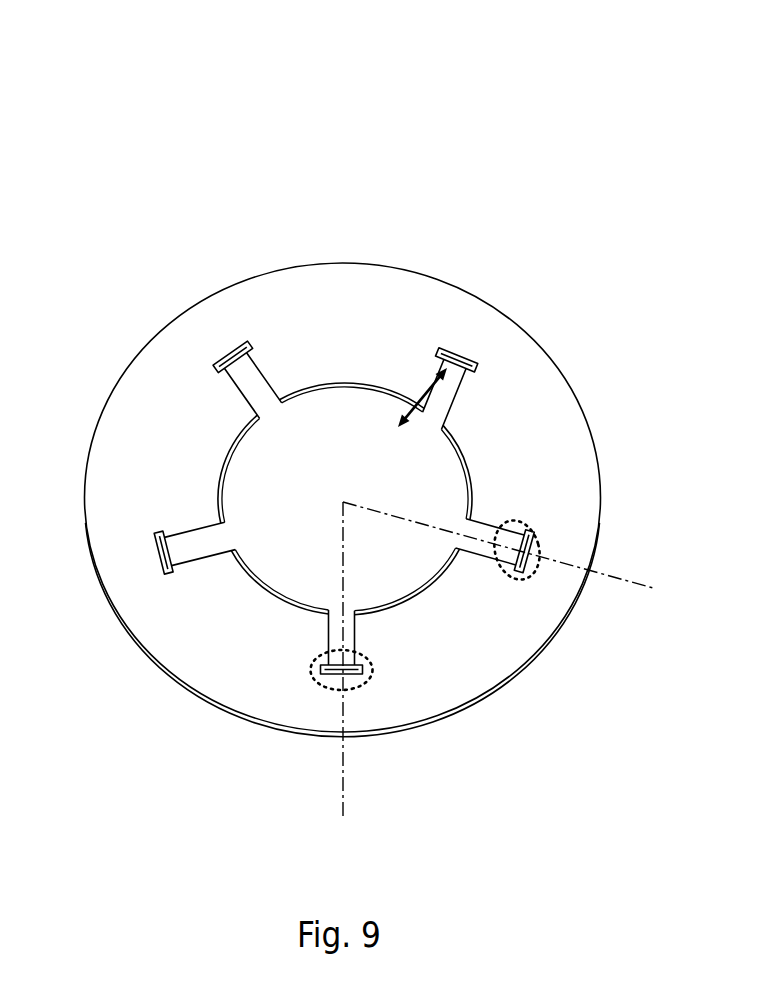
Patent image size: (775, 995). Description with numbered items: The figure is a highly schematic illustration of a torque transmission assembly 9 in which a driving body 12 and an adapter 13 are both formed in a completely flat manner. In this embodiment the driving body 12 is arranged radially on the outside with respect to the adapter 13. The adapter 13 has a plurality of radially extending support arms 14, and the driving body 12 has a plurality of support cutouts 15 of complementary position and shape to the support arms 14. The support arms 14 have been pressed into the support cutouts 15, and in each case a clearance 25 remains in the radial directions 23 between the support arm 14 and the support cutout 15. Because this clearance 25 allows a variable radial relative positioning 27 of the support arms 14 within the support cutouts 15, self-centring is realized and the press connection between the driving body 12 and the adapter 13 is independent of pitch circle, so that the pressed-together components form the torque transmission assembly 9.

The torque transmission assembly 9 is at (600, 129).
The driving body 12 is at (281, 305).
The adapter 13 is at (428, 457).
The support arms 14 is at (340, 637).
The support cutouts 15 is at (230, 354).
The radial directions 23 is at (617, 578).
The clearance 25 is at (505, 575).
The variable radial relative positioning 27 is at (423, 397).